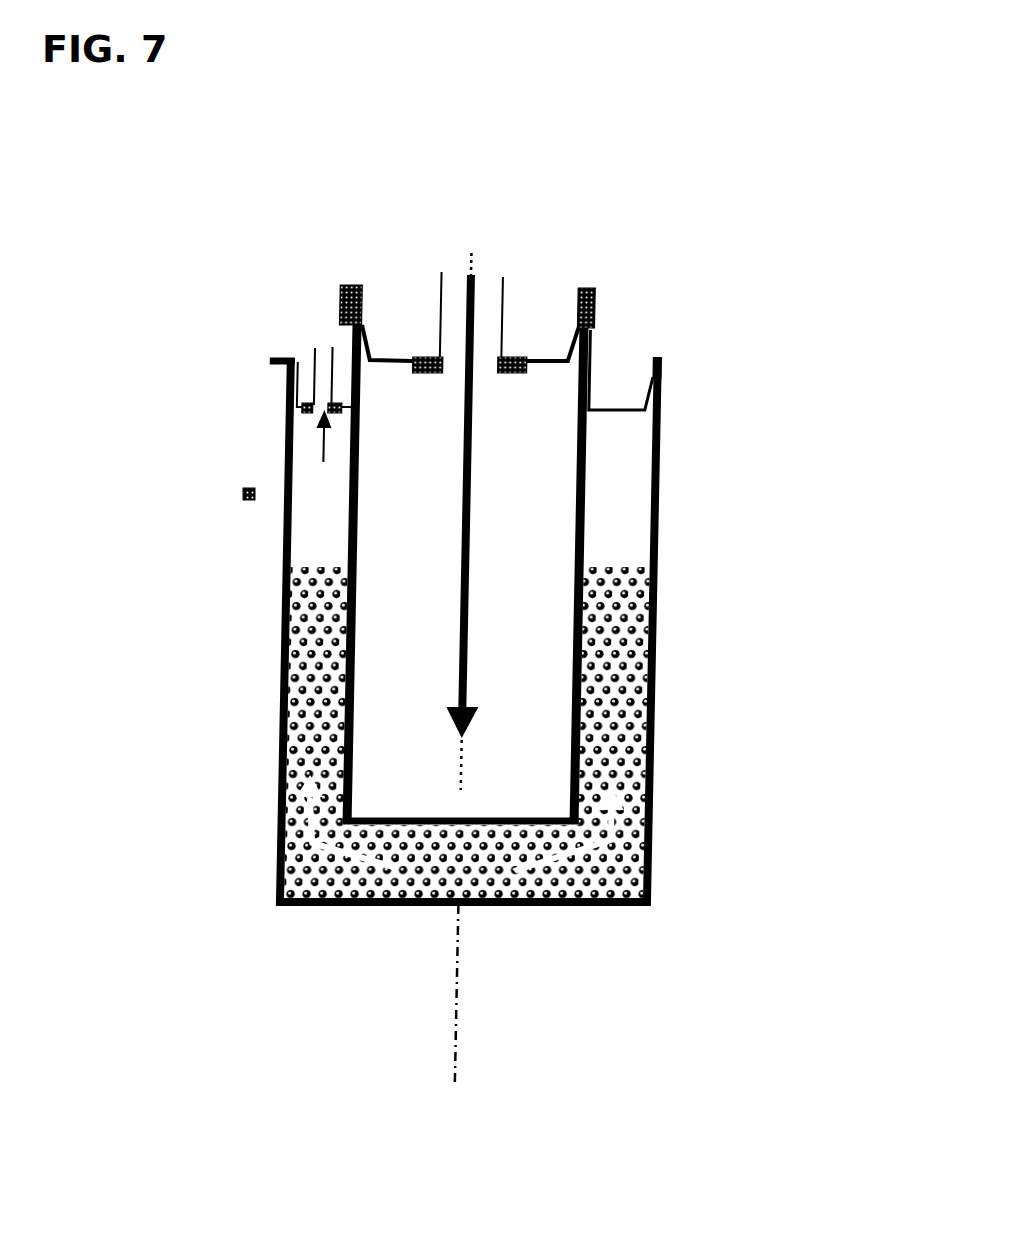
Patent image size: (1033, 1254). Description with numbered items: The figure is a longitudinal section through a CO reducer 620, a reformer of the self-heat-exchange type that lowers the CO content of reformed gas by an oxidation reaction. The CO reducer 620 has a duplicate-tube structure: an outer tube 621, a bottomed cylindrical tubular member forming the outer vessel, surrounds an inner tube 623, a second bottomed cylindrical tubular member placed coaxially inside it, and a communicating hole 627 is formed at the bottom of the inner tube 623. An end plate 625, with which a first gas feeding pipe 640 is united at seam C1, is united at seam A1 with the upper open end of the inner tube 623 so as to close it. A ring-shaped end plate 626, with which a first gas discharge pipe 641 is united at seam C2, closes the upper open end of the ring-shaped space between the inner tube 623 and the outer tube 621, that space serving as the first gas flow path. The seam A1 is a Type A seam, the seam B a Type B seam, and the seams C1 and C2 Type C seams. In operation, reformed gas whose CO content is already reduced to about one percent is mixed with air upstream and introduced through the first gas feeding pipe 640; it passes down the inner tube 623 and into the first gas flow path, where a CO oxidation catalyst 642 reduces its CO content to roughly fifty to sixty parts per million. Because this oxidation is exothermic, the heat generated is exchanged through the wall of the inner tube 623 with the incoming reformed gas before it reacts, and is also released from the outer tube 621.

The CO reducer 620 is at (500, 627).
The outer tube 621 is at (658, 523).
The inner tube 623 is at (583, 479).
The end plate 625 is at (539, 366).
The ring-shaped end plate 626 is at (605, 412).
The communicating hole 627 is at (480, 822).
The first gas feeding pipe 640 is at (498, 308).
The first gas discharge pipe 641 is at (331, 350).
The CO oxidation catalyst 642 is at (278, 702).
The seam A1 is at (596, 305).
The seam B is at (283, 358).
The seam C1 is at (427, 357).
The seam C2 is at (307, 402).